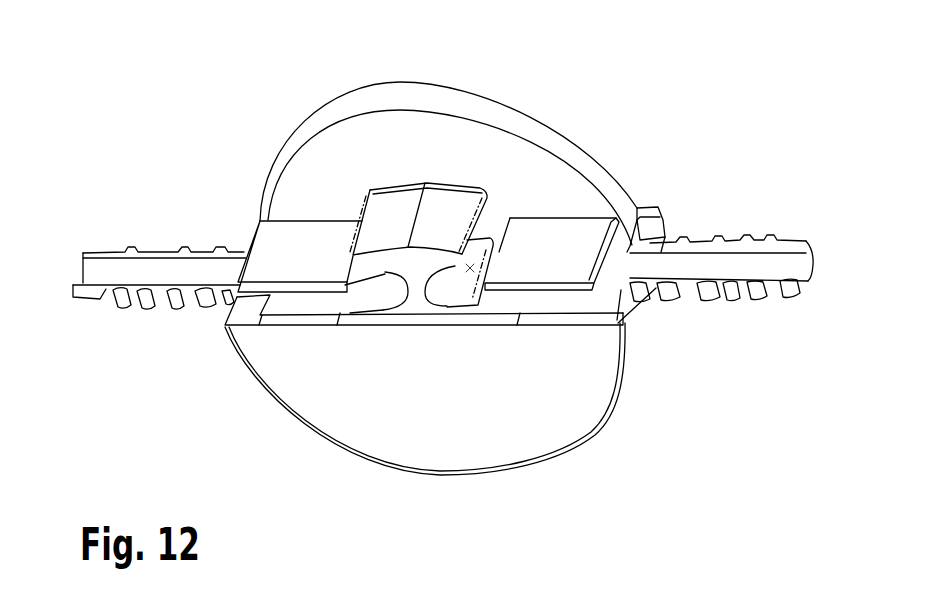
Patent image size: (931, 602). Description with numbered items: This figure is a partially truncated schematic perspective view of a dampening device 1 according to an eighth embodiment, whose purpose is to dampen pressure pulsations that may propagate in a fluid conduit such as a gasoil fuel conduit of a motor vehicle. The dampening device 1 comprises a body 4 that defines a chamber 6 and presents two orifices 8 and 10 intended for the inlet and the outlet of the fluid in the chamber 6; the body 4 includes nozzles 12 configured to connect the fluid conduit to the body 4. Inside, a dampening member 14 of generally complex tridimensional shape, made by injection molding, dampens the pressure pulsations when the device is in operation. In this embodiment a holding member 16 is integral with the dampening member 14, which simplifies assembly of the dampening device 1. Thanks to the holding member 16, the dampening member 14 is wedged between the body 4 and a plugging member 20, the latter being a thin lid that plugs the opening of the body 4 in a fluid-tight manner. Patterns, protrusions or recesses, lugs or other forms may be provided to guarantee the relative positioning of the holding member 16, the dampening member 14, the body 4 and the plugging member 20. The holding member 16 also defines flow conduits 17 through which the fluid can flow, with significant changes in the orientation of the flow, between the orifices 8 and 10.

The dampening device 1 is at (443, 260).
The body 4 is at (278, 373).
The chamber 6 is at (318, 303).
The orifice 8 is at (237, 271).
The orifice 10 is at (632, 263).
The nozzle 12 is at (152, 252).
The dampening member 14 is at (345, 113).
The holding member 16 is at (424, 265).
The flow conduit 17 is at (468, 289).
The plugging member 20 is at (649, 212).